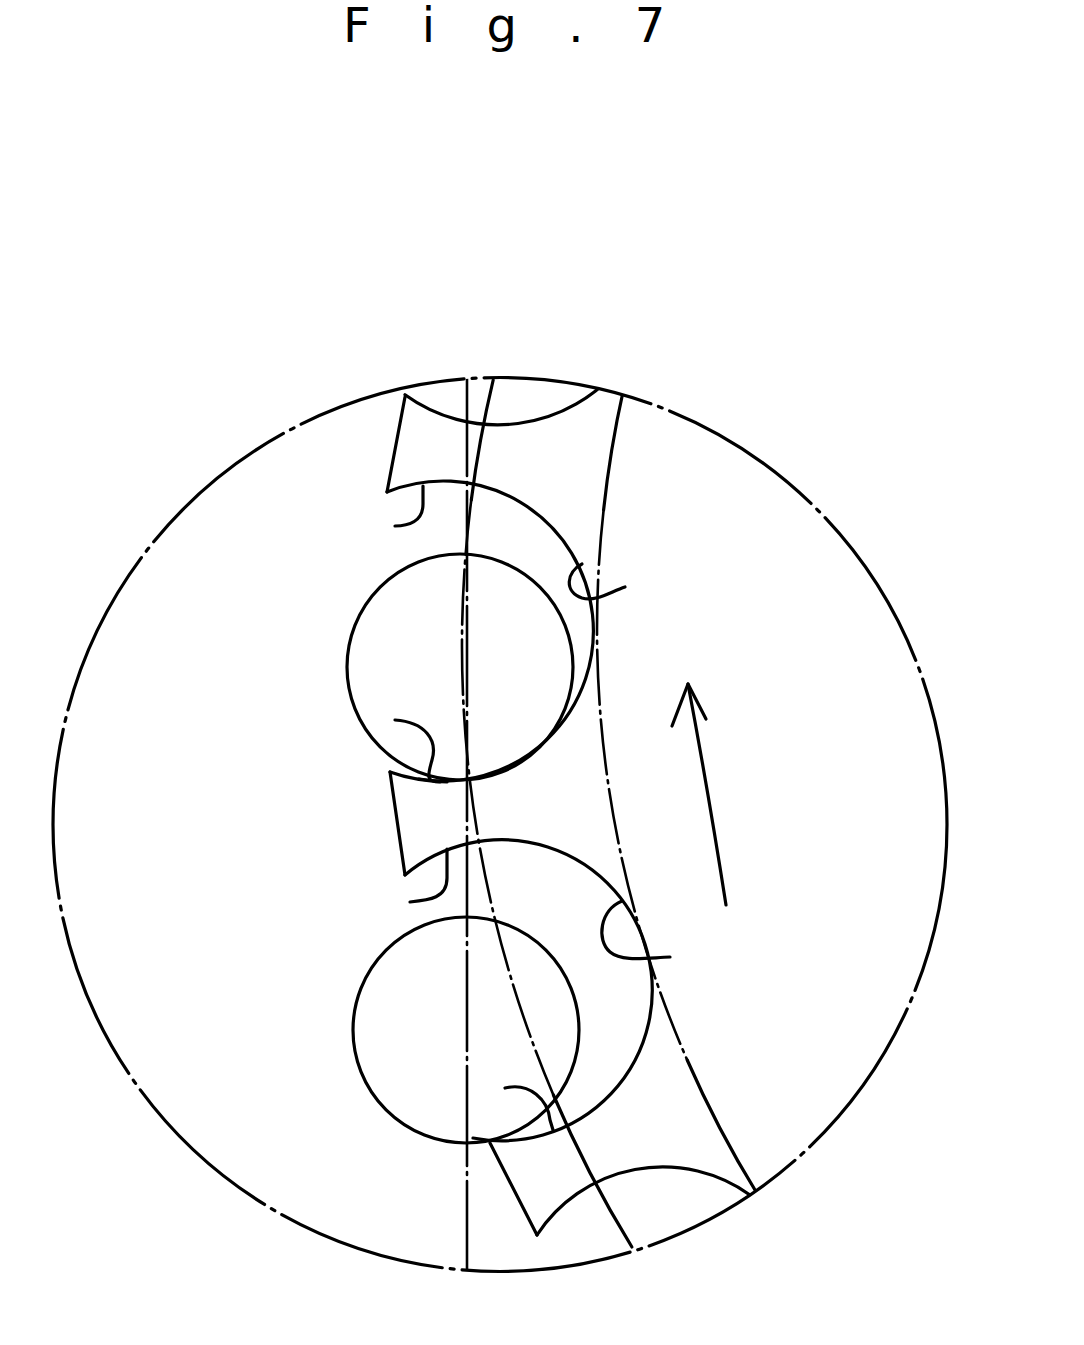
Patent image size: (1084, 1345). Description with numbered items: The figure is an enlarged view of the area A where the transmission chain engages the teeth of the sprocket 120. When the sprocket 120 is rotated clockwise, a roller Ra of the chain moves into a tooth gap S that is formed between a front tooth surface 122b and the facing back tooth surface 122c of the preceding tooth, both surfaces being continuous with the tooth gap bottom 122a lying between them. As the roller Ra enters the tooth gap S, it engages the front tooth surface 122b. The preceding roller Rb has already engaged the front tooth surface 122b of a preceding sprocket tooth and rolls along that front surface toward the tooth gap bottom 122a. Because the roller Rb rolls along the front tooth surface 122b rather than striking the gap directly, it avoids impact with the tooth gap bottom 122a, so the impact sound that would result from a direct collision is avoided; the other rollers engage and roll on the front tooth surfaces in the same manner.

The sprocket 120 is at (858, 847).
The tooth gap bottom 122a is at (625, 587).
The front tooth surface 122b is at (395, 720).
The back tooth surface 122c is at (395, 526).
The tooth gap S is at (520, 540).
The roller Ra is at (355, 632).
The preceding roller Rb is at (363, 1046).
The area A is at (305, 406).